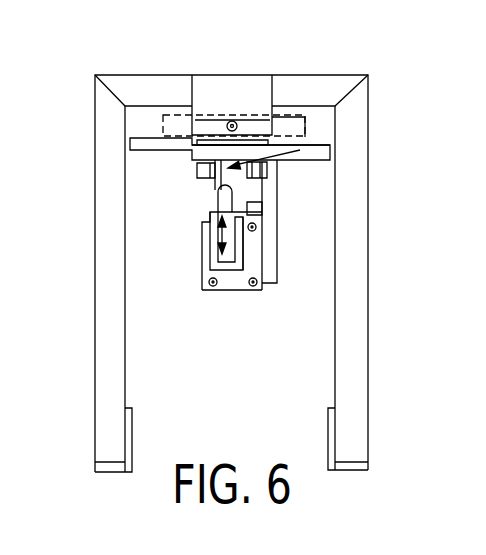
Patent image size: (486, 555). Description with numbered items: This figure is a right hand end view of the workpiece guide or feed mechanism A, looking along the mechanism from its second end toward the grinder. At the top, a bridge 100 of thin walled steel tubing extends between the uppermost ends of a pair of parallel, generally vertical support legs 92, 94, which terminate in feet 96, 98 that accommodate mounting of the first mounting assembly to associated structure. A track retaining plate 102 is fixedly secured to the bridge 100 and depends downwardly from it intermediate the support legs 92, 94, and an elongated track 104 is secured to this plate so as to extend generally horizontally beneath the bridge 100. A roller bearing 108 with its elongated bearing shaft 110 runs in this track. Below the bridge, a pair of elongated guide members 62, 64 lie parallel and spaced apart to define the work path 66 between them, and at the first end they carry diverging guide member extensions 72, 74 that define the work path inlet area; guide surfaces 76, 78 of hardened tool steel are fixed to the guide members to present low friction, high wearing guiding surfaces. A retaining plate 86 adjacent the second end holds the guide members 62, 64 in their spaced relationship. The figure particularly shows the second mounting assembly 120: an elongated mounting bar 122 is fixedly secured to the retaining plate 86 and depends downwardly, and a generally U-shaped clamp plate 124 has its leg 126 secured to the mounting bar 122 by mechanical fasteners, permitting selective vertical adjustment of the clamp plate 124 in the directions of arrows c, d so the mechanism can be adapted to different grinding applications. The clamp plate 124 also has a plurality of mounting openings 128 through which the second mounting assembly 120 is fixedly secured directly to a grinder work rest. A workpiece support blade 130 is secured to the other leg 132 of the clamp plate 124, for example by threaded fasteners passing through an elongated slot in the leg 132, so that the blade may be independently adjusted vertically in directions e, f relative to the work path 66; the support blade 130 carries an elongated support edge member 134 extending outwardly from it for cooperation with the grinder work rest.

The bridge 100 is at (152, 82).
The track retaining plate 102 is at (243, 75).
The elongated track 104 is at (293, 128).
The roller bearing 108 is at (275, 87).
The bearing shaft 110 is at (232, 122).
The guide member extension 74 is at (317, 140).
The work path 66 is at (300, 150).
The retaining plate 86 is at (192, 145).
The guide member extension 72 is at (130, 150).
The guide surface 76 is at (197, 173).
The guide surface 78 is at (267, 172).
The guide member 62 is at (216, 185).
The guide member 64 is at (262, 190).
The support leg 92 is at (108, 237).
The support leg 94 is at (352, 260).
The foot 96 is at (113, 463).
The foot 98 is at (350, 463).
The second mounting assembly 120 is at (183, 305).
The mounting bar 122 is at (268, 255).
The clamp plate 124 is at (236, 294).
The clamp plate leg 126 is at (250, 260).
The mounting openings 128 is at (256, 227).
The workpiece support blade 130 is at (212, 226).
The clamp plate leg 132 is at (209, 262).
The support edge member 134 is at (217, 210).
The adjustment direction e is at (240, 213).
The adjustment direction f is at (207, 258).
The workpiece guide or feed mechanism A is at (378, 228).
The adjustment direction c is at (305, 390).
The adjustment direction d is at (305, 390).